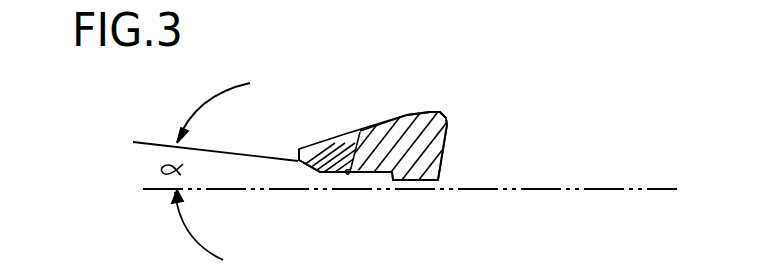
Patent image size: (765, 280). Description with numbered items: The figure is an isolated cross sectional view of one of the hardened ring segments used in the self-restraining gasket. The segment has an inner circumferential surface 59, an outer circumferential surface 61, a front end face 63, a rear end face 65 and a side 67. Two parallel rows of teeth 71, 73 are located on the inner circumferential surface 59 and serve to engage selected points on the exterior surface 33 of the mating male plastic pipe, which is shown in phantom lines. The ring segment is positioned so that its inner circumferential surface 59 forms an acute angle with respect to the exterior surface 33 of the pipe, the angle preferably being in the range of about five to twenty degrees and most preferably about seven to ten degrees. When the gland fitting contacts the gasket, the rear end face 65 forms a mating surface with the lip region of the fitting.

The exterior surface of the mating male plastic pipe 33 is at (477, 187).
The inner circumferential surface 59 is at (360, 132).
The outer circumferential surface 61 is at (375, 125).
The front end face 63 is at (297, 158).
The rear end face 65 is at (447, 143).
The side 67 is at (432, 115).
The row of teeth 71 is at (323, 173).
The row of teeth 73 is at (391, 180).